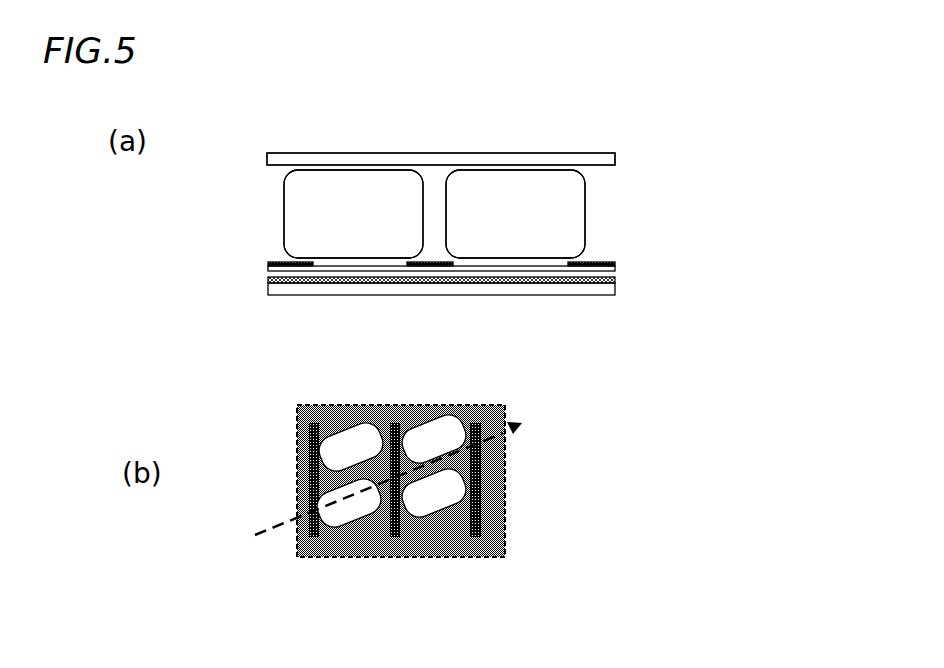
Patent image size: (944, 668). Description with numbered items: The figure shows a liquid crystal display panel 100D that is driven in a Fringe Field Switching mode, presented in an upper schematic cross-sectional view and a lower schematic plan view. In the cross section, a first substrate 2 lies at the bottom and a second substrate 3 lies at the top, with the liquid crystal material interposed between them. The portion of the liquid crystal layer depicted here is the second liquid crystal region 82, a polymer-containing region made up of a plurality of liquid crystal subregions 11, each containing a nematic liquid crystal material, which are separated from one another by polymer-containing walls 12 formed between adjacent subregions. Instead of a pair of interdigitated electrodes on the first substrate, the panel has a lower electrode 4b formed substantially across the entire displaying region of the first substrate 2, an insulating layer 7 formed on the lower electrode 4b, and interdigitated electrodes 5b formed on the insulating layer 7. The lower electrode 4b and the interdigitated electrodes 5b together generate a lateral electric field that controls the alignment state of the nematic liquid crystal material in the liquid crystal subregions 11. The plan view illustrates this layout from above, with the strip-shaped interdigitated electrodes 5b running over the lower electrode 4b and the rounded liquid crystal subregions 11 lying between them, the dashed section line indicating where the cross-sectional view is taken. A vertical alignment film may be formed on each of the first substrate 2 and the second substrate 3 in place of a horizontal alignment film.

The liquid crystal display panel 100D is at (664, 174).
The second substrate 3 is at (580, 162).
The second liquid crystal region 82 is at (610, 170).
The liquid crystal subregion 11 is at (508, 253).
The polymer-containing wall 12 is at (436, 254).
The interdigitated electrodes 5b is at (425, 266).
The insulating layer 7 is at (268, 270).
The lower electrode 4b is at (362, 284).
The first substrate 2 is at (612, 290).